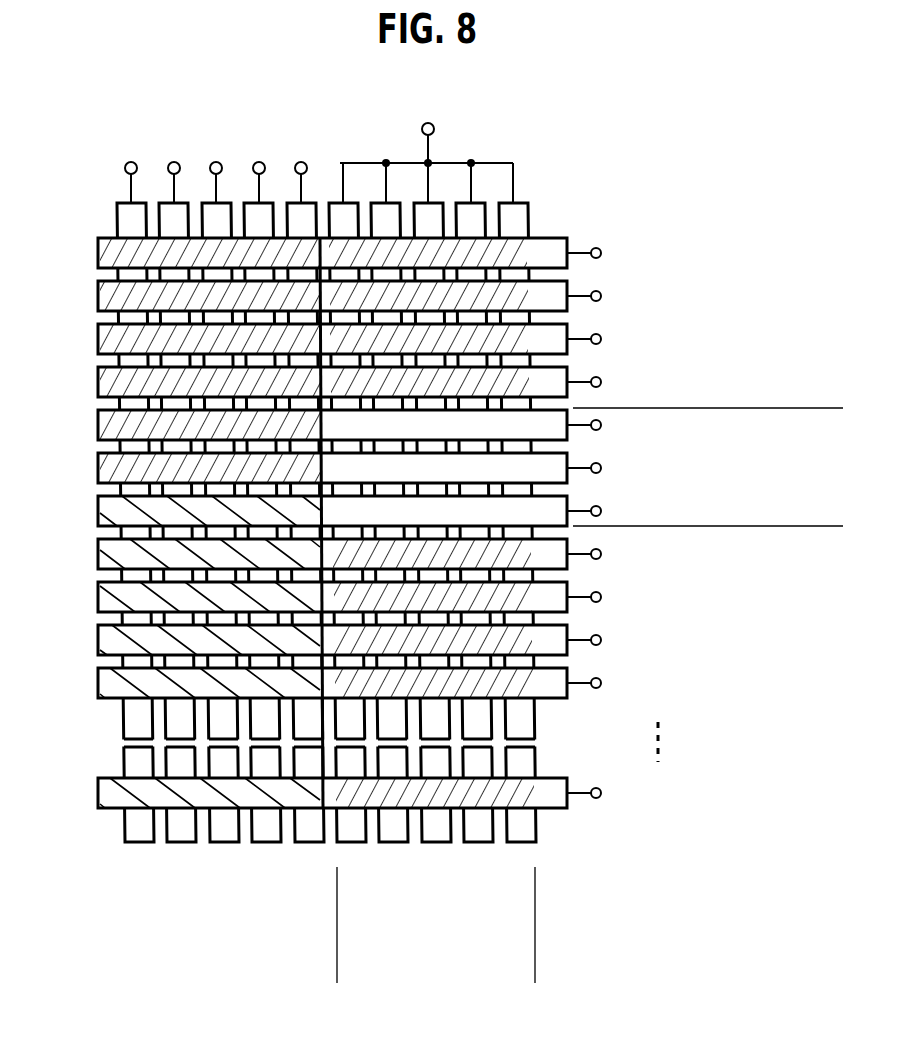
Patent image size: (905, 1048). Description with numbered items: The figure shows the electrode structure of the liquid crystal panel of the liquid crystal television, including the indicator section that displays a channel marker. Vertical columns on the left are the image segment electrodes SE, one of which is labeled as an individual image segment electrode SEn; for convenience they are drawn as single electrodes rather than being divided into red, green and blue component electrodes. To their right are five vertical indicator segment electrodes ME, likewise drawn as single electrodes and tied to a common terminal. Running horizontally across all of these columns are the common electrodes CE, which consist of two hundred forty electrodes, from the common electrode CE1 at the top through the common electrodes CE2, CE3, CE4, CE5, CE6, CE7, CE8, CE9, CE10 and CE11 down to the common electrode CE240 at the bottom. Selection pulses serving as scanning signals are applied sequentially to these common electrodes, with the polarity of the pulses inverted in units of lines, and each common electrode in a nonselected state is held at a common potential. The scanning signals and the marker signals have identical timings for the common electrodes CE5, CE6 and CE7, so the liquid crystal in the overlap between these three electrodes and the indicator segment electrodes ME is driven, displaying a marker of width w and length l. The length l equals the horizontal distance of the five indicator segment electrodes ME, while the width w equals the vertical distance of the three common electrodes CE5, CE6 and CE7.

The image segment electrodes SE is at (310, 153).
The image segment electrode SEn is at (227, 828).
The indicator segment electrodes ME is at (533, 857).
The common electrodes CE is at (435, 522).
The common electrode CE1 is at (552, 252).
The common electrode CE2 is at (552, 295).
The common electrode CE3 is at (552, 338).
The common electrode CE4 is at (552, 381).
The common electrode CE5 is at (553, 431).
The common electrode CE6 is at (553, 474).
The common electrode CE7 is at (552, 510).
The common electrode CE8 is at (553, 560).
The common electrode CE9 is at (553, 603).
The common electrode CE10 is at (553, 646).
The common electrode CE11 is at (553, 689).
The common electrode CE240 is at (398, 790).
The marker width w is at (830, 416).
The marker length l is at (527, 971).